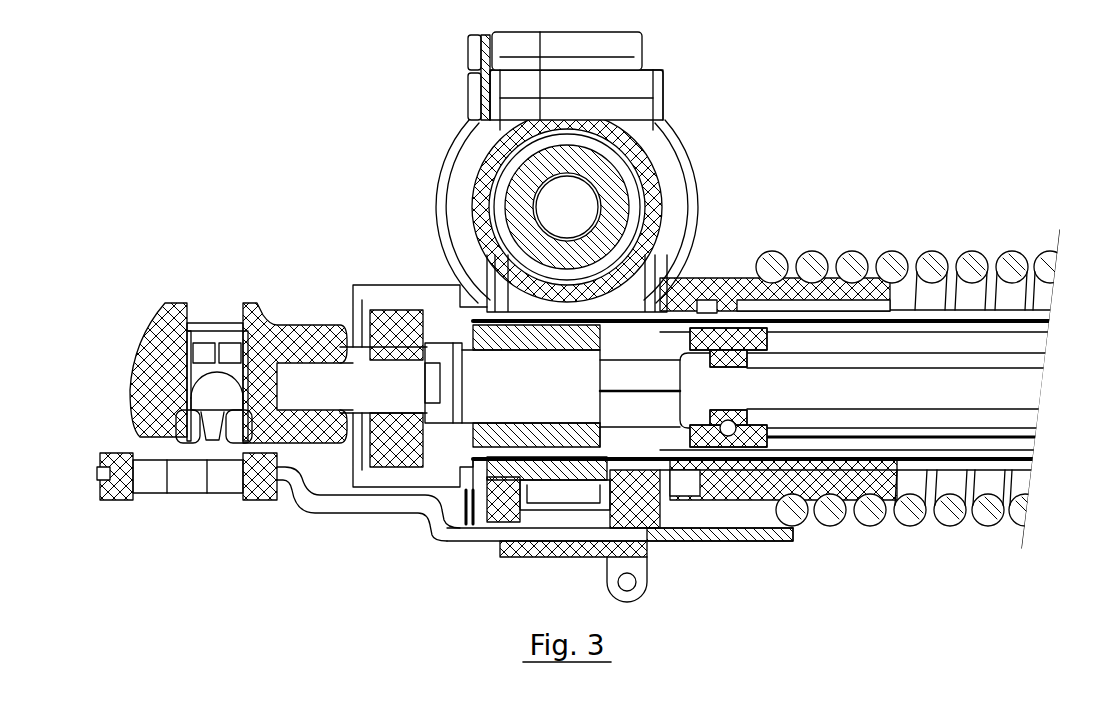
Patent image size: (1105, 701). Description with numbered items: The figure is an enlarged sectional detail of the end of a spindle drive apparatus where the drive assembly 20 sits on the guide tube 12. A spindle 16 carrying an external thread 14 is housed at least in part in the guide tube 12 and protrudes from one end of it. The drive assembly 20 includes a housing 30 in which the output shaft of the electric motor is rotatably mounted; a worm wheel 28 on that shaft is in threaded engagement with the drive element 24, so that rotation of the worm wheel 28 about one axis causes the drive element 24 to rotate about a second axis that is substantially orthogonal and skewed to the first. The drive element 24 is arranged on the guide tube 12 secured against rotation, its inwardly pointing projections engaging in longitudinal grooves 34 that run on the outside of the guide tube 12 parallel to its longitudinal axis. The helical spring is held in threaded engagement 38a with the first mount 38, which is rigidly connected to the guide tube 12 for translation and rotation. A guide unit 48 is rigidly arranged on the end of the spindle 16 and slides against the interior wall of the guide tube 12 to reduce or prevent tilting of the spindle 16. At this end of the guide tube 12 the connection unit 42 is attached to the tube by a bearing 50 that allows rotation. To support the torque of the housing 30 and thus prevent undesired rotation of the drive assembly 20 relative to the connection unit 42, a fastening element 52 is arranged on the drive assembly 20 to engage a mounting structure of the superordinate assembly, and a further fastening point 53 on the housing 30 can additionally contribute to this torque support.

The drive assembly 20 is at (320, 82).
The guide tube 12 is at (963, 317).
The external thread 14 is at (890, 360).
The spindle 16 is at (810, 390).
The drive element 24 is at (478, 253).
The worm wheel 28 is at (537, 167).
The housing 30 is at (470, 50).
The longitudinal grooves 34 is at (938, 468).
The first mount 38 is at (778, 304).
The threaded engagement 38a is at (793, 285).
The connection unit 42 is at (163, 316).
The guide unit 48 is at (778, 448).
The bearing 50 is at (475, 345).
The fastening element 52 is at (287, 487).
The further fastening point 53 is at (648, 583).